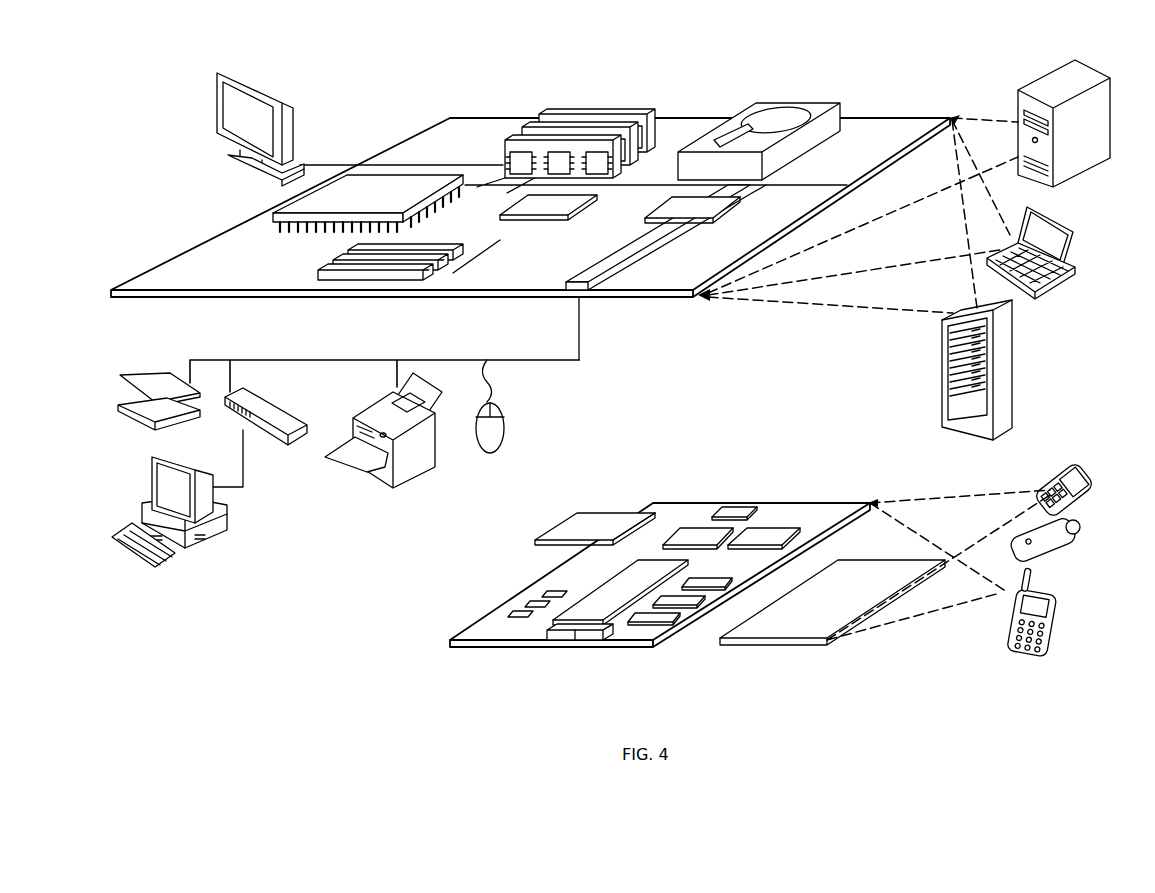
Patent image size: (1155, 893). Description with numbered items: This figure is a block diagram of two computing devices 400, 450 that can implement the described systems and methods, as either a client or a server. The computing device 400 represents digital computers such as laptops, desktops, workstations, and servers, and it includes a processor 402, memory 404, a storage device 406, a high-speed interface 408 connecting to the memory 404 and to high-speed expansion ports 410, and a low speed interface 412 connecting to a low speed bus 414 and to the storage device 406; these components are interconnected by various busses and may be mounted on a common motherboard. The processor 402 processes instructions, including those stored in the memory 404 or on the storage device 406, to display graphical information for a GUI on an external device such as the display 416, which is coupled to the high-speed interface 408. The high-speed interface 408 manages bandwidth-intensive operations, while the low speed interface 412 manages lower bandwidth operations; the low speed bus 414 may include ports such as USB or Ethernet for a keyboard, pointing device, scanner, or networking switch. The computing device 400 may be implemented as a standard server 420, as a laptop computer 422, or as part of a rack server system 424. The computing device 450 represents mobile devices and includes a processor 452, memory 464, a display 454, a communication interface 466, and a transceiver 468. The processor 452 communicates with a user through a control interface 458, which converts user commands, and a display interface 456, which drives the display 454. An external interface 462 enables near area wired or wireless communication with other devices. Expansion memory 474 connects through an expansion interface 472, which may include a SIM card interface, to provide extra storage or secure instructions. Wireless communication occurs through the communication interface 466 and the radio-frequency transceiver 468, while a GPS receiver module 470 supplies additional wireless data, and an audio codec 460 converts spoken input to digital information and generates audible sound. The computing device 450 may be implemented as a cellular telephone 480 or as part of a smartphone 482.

The computing device 400 is at (385, 97).
The processor 402 is at (280, 215).
The memory 404 is at (549, 110).
The storage device 406 is at (746, 97).
The high-speed interface 408 is at (530, 203).
The high-speed expansion ports 410 is at (333, 266).
The low speed interface 412 is at (678, 204).
The low speed bus 414 is at (596, 290).
The display 416 is at (218, 78).
The standard server 420 is at (1018, 101).
The laptop computer 422 is at (1075, 232).
The rack server system 424 is at (945, 394).
The computing device 450 is at (433, 644).
The processor 452 is at (600, 613).
The display 454 is at (800, 626).
The display interface 456 is at (655, 622).
The control interface 458 is at (690, 601).
The audio codec 460 is at (708, 584).
The external interface 462 is at (567, 642).
The memory 464 is at (545, 605).
The communication interface 466 is at (700, 536).
The transceiver 468 is at (762, 536).
The GPS receiver module 470 is at (741, 506).
The expansion interface 472 is at (627, 513).
The expansion memory 474 is at (580, 515).
The cellular telephone 480 is at (1053, 470).
The smartphone 482 is at (1011, 618).